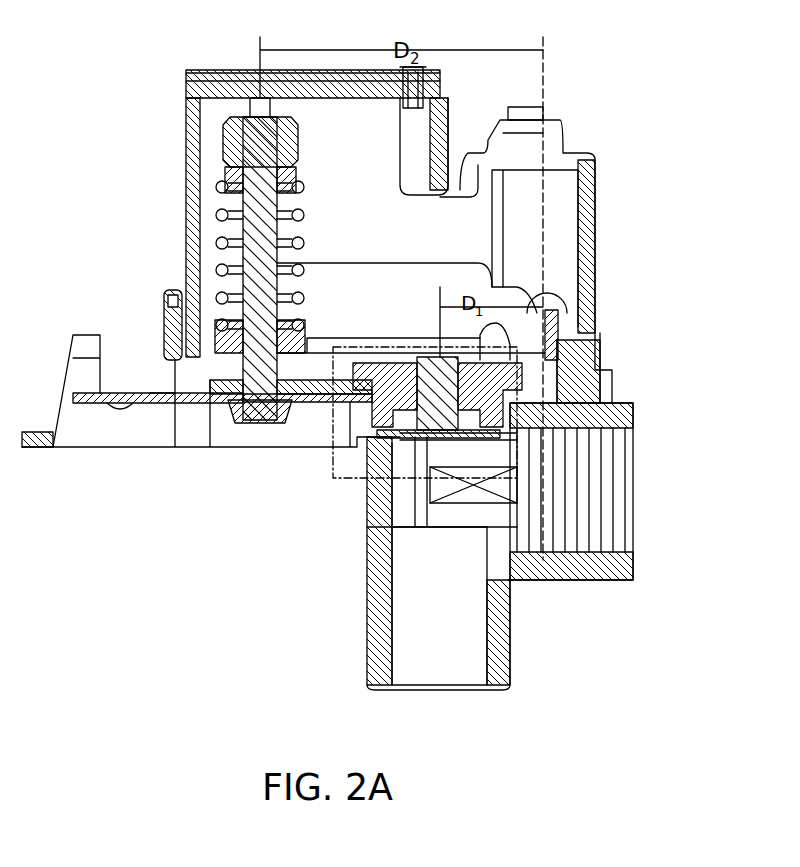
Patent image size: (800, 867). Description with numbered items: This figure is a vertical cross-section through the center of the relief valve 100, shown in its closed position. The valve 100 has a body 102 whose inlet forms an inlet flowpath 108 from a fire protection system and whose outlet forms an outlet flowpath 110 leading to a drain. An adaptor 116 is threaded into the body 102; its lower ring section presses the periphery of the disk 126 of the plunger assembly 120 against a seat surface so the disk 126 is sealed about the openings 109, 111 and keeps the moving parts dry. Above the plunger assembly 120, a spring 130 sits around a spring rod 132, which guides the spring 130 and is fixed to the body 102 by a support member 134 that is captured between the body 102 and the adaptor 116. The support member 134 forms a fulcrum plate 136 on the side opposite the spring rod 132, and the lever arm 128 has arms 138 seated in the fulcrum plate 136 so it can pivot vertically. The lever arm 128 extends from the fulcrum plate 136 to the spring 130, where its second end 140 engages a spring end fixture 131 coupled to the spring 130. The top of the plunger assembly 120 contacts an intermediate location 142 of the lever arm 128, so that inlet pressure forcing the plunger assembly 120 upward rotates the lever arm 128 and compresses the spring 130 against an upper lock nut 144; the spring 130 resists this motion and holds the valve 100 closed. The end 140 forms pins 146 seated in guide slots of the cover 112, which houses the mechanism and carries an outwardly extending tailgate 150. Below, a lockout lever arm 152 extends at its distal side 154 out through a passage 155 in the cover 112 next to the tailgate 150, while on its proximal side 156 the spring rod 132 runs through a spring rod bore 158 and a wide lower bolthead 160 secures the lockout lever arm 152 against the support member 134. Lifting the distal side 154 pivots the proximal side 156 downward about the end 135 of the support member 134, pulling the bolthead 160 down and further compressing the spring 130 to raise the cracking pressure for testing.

The relief valve 100 is at (148, 92).
The body 102 is at (373, 553).
The inlet flowpath 108 is at (453, 678).
The opening 109 is at (402, 513).
The outlet flowpath 110 is at (587, 505).
The opening 111 is at (472, 450).
The cover 112 is at (192, 160).
The adaptor 116 is at (397, 373).
The plunger assembly 120 is at (447, 382).
The disk 126 is at (387, 457).
The lever arm 128 is at (370, 280).
The spring 130 is at (303, 225).
The spring end fixture 131 is at (230, 178).
The spring rod 132 is at (258, 262).
The support member 134 is at (315, 390).
The end 135 is at (158, 400).
The fulcrum plate 136 is at (562, 370).
The arms 138 is at (575, 327).
The second end 140 is at (173, 300).
The intermediate location 142 is at (425, 367).
The upper lock nut 144 is at (300, 135).
The pins 146 is at (173, 293).
The tailgate 150 is at (88, 345).
The lockout lever arm 152 is at (100, 440).
The distal side 154 is at (72, 395).
The passage 155 is at (170, 381).
The proximal side 156 is at (325, 403).
The spring rod bore 158 is at (220, 396).
The lower bolthead 160 is at (233, 422).